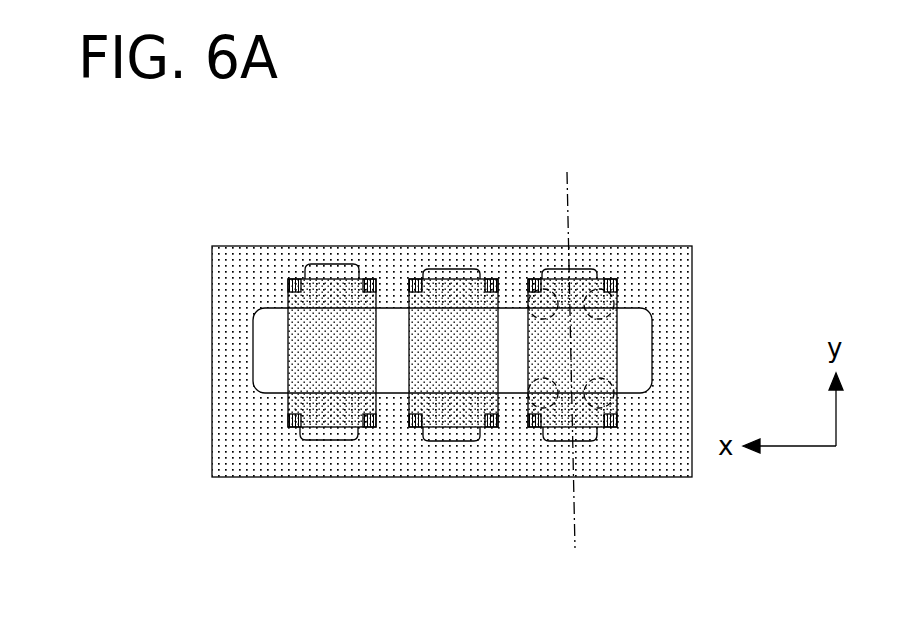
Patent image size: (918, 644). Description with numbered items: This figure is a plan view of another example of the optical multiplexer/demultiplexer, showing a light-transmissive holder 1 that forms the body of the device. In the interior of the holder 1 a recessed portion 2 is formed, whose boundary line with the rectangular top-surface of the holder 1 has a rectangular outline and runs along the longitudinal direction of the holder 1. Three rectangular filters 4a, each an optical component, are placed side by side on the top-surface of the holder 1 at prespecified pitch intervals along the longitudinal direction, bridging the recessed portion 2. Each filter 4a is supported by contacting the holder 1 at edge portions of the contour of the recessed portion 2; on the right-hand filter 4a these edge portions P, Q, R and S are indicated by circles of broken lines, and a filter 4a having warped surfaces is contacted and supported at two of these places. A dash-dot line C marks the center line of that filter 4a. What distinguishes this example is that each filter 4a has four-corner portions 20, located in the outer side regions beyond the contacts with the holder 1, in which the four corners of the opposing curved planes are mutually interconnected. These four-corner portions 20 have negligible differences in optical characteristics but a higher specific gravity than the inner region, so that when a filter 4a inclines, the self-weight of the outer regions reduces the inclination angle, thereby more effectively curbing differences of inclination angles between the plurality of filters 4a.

The holder 1 is at (638, 263).
The recessed portion 2 is at (252, 343).
The filter 4a is at (329, 291).
The four-corner portion 20 is at (292, 427).
The center line C is at (573, 360).
The edge portion R is at (528, 315).
The edge portion Q is at (592, 287).
The edge portion S is at (552, 412).
The edge portion P is at (597, 412).